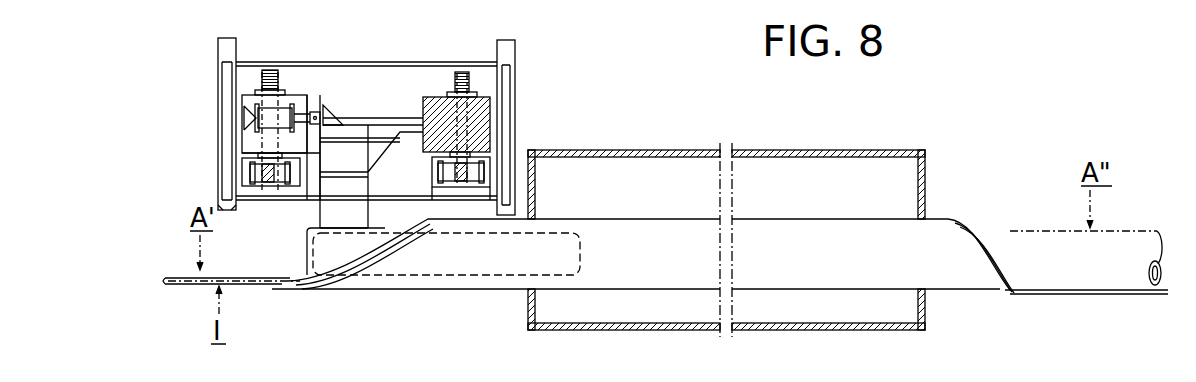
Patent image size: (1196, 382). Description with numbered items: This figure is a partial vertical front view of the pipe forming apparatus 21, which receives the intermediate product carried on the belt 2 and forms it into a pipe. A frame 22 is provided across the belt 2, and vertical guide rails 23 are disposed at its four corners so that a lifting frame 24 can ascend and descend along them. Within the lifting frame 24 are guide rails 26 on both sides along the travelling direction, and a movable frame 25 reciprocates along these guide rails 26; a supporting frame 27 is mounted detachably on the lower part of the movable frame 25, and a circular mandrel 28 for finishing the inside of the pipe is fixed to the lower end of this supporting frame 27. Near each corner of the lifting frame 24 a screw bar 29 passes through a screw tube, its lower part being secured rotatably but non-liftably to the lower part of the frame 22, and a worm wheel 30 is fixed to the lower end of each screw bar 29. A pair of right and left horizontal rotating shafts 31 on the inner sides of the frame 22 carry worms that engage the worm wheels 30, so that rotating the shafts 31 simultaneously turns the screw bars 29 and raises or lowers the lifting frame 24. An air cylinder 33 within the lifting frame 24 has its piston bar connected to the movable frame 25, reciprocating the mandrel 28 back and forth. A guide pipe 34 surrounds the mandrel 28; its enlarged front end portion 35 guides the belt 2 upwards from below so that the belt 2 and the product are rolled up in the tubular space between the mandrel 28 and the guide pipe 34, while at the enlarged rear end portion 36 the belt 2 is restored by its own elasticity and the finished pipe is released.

The belt 2 is at (170, 278).
The pipe forming apparatus 21 is at (323, 60).
The frame 22 is at (500, 82).
The vertical guide rails 23 is at (232, 78).
The lifting frame 24 is at (482, 115).
The movable frame 25 is at (388, 128).
The guide rails 26 is at (350, 118).
The supporting frame 27 is at (320, 212).
The circular mandrel 28 is at (322, 247).
The screw bar 29 is at (460, 78).
The worm wheel 30 is at (480, 164).
The horizontal rotating shafts 31 is at (248, 170).
The air cylinder 33 is at (288, 100).
The guide pipe 34 is at (656, 294).
The front end portion 35 is at (374, 292).
The rear end portion 36 is at (986, 294).